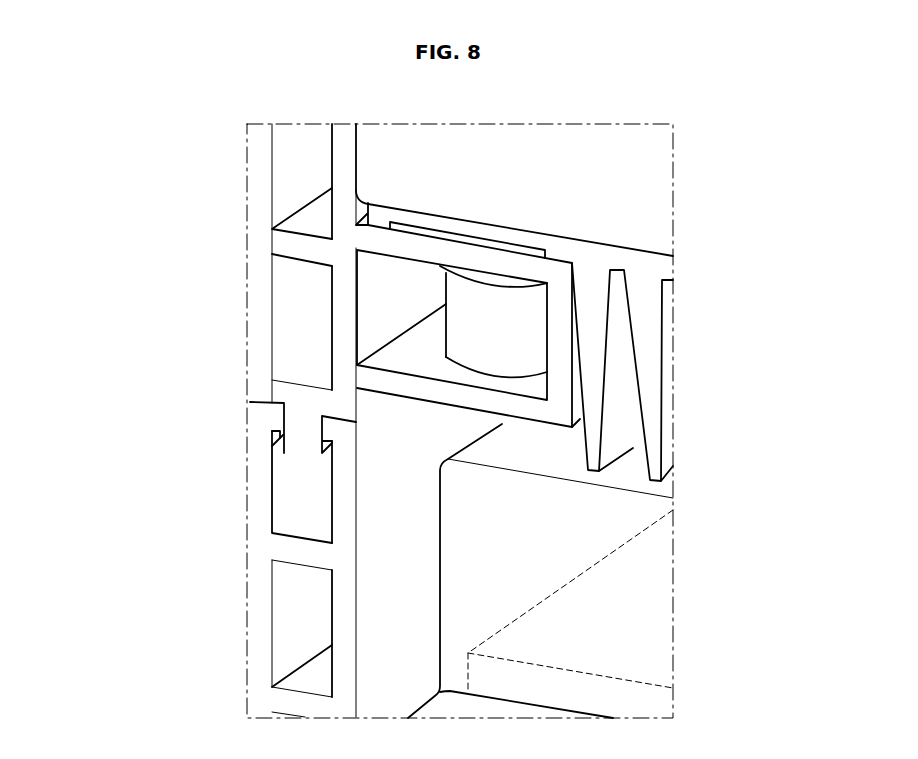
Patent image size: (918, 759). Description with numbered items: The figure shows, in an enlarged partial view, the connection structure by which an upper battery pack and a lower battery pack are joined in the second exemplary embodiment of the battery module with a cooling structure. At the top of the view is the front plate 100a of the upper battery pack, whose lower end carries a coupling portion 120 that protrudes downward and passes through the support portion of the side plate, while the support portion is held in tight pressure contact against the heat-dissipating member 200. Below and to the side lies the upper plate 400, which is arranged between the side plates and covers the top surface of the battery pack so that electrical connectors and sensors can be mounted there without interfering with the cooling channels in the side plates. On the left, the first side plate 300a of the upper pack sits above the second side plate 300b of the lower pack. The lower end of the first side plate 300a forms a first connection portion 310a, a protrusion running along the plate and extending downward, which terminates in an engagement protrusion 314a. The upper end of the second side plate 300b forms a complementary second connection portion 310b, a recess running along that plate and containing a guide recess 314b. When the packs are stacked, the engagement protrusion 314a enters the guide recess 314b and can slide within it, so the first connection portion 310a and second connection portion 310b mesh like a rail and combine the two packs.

The front plate 100a is at (658, 207).
The coupling portion 120 is at (512, 345).
The heat-dissipating member 200 is at (647, 322).
The upper plate 400 is at (548, 537).
The first side plate 300a is at (260, 242).
The second side plate 300b is at (260, 660).
The first connection portion 310a is at (290, 418).
The second connection portion 310b is at (262, 505).
The engagement protrusion 314a is at (278, 448).
The guide recess 314b is at (328, 420).